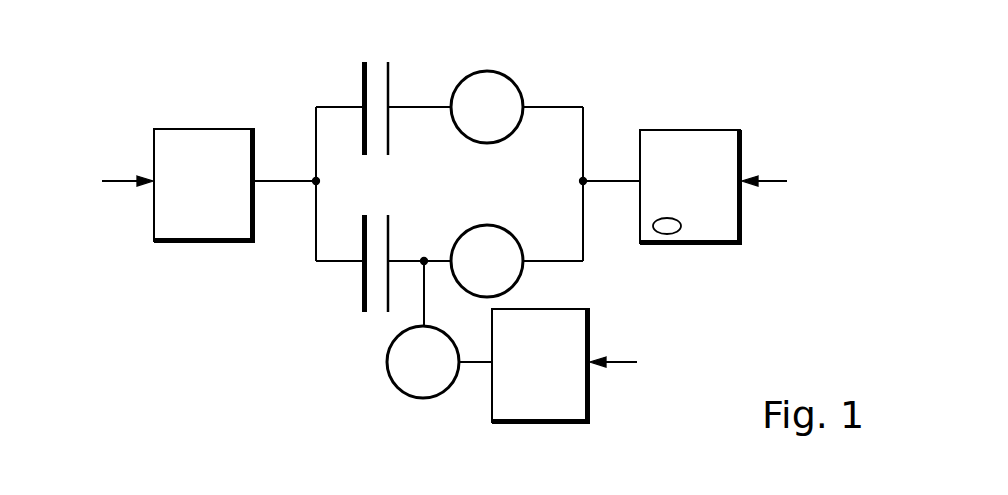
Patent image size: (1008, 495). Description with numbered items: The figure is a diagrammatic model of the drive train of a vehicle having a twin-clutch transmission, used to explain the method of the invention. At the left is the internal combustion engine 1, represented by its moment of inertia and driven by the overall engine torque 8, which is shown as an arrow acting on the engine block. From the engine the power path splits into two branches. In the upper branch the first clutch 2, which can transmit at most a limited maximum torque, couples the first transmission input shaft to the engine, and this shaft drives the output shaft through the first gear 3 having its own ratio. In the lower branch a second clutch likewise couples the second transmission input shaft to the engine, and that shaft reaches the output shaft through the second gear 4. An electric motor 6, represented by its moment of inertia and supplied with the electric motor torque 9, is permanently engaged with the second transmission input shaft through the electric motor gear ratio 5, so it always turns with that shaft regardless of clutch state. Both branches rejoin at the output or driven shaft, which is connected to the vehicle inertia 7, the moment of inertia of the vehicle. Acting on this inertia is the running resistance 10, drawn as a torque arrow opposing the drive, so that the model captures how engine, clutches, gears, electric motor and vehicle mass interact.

The internal combustion engine 1 is at (204, 186).
The first clutch 2 is at (383, 173).
The first gear 3 is at (487, 107).
The second gear 4 is at (487, 261).
The electric motor gear ratio 5 is at (423, 362).
The electric motor 6 is at (541, 366).
The vehicle inertia 7 is at (691, 187).
The engine torque 8 is at (91, 179).
The electric motor torque 9 is at (664, 367).
The running resistance 10 is at (817, 184).